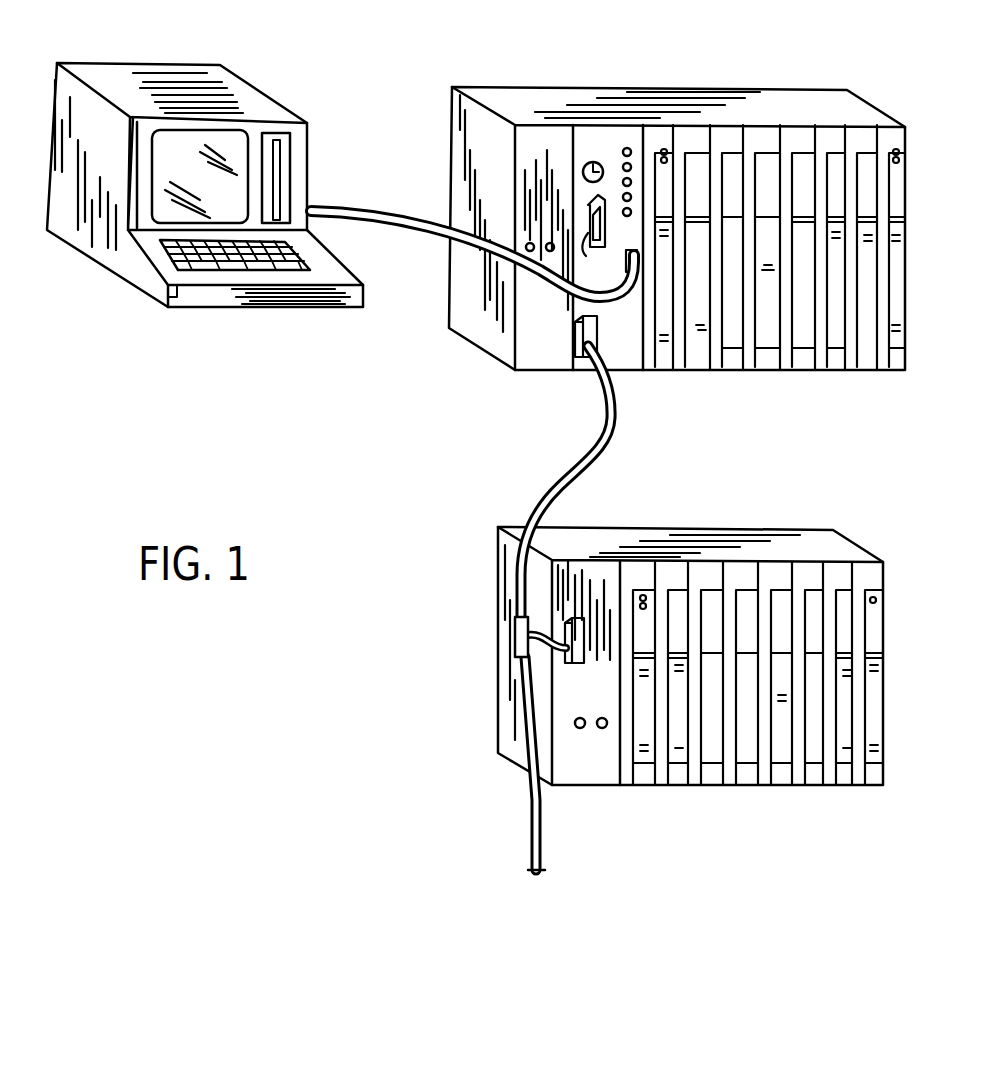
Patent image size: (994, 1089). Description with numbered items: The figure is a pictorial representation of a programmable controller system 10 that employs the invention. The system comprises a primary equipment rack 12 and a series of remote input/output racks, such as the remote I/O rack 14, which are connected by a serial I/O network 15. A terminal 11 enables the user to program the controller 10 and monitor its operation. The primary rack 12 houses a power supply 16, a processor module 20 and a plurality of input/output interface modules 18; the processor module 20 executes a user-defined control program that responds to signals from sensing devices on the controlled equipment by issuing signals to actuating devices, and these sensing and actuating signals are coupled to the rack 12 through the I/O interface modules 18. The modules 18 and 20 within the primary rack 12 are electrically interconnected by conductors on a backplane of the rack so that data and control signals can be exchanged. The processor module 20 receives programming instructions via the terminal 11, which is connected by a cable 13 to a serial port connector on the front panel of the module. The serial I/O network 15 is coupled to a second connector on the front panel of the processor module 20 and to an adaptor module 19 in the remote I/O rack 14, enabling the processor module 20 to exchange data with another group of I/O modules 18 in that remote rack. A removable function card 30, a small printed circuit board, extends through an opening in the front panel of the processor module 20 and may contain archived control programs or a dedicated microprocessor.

The programmable controller system 10 is at (408, 376).
The terminal 11 is at (320, 177).
The primary equipment rack 12 is at (650, 78).
The cable 13 is at (432, 232).
The remote input/output rack 14 is at (710, 518).
The serial I/O network 15 is at (578, 455).
The power supply 16 is at (547, 360).
The input/output interface modules 18 is at (658, 372).
The adaptor module 19 is at (580, 787).
The processor module 20 is at (627, 362).
The function card 30 is at (607, 269).